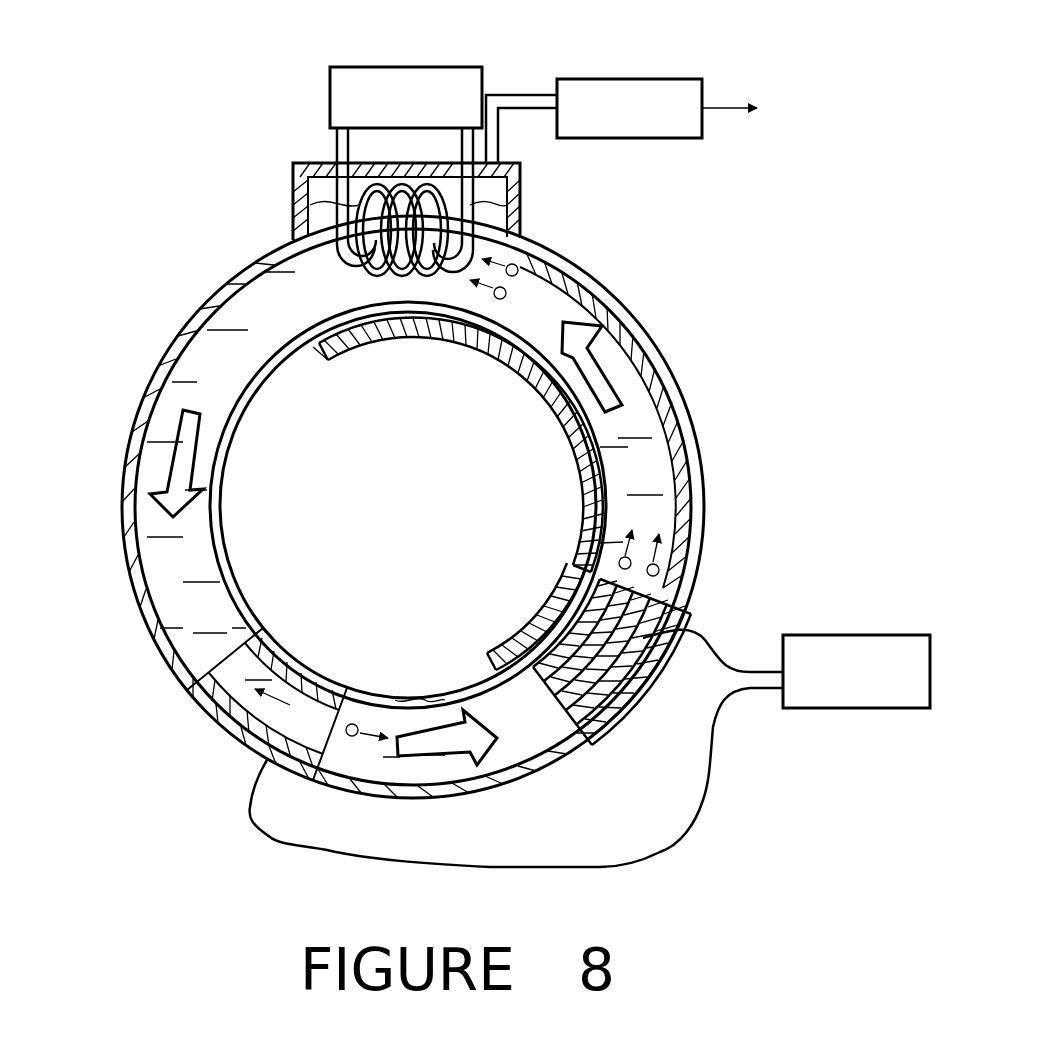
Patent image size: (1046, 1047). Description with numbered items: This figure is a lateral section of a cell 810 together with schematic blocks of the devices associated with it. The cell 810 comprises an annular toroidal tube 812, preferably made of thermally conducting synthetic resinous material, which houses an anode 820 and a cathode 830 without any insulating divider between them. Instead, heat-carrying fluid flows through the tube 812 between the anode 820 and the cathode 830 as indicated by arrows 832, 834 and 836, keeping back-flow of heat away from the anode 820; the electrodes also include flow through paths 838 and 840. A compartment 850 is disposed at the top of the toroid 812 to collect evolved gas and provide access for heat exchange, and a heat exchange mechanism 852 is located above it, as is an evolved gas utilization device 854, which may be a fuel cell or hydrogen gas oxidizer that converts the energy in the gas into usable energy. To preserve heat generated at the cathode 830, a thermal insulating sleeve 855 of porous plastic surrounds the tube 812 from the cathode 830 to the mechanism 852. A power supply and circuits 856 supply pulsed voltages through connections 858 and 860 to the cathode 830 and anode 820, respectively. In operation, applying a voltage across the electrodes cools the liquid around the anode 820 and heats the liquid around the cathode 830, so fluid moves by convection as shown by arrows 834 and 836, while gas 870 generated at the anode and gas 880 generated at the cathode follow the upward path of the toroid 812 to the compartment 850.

The cell 810 is at (692, 306).
The annular toroidal tube 812 is at (696, 360).
The anode 820 is at (303, 660).
The cathode 830 is at (565, 574).
The arrow 832 is at (127, 466).
The arrow 834 is at (400, 698).
The arrow 836 is at (667, 405).
The flow through path 838 is at (236, 732).
The flow through path 840 is at (662, 708).
The compartment 850 is at (542, 190).
The heat exchange mechanism 852 is at (400, 66).
The evolved gas utilization device 854 is at (648, 77).
The thermal insulating sleeve 855 is at (645, 280).
The power supply and circuits 856 is at (848, 636).
The connection 858 is at (714, 634).
The connection 860 is at (553, 868).
The gas generated at anode 870 is at (512, 264).
The gas generated at cathode 880 is at (485, 345).